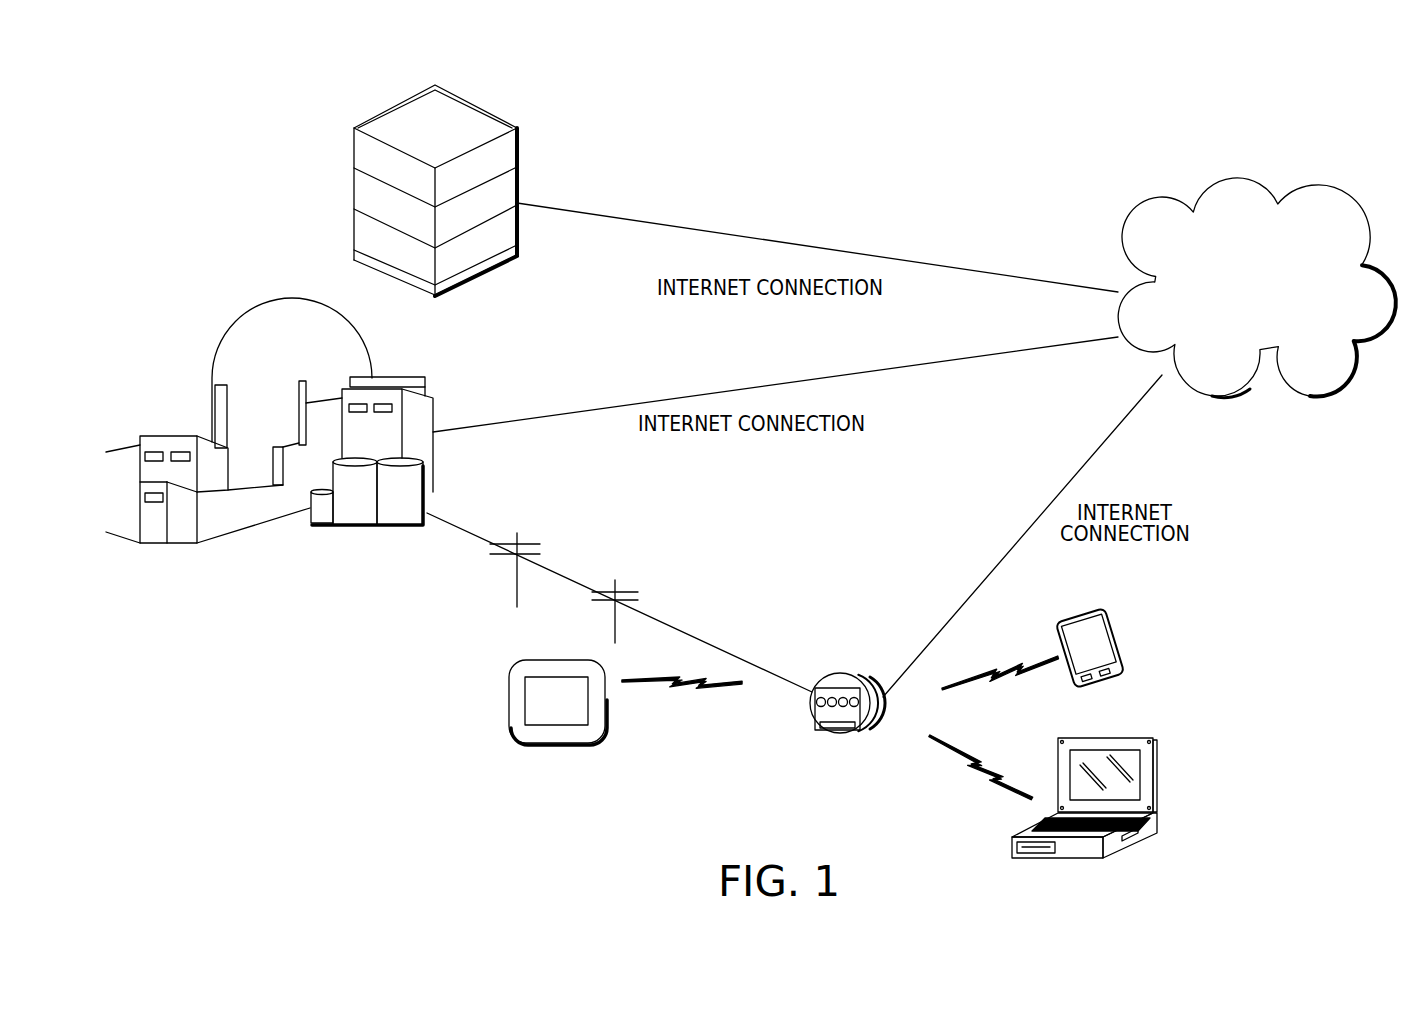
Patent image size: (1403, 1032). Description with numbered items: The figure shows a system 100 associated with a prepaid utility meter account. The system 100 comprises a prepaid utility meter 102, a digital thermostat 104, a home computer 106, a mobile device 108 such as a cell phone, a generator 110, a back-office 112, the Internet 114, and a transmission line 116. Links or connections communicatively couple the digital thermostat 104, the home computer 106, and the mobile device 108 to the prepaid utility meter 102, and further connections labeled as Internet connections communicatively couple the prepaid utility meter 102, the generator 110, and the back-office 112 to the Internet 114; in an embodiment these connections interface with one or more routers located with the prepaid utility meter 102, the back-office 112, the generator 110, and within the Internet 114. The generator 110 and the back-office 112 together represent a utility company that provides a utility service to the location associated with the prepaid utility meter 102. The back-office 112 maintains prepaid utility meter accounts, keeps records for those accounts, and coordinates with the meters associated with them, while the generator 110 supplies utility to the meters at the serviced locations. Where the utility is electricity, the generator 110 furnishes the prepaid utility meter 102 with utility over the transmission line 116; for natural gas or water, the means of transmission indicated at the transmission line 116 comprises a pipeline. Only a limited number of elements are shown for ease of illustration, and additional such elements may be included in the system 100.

The system 100 is at (1338, 134).
The prepaid utility meter 102 is at (849, 672).
The digital thermostat 104 is at (509, 701).
The home computer 106 is at (1157, 778).
The mobile device 108 is at (1120, 642).
The generator 110 is at (226, 337).
The back-office 112 is at (354, 207).
The Internet 114 is at (1264, 390).
The transmission line 116 is at (562, 577).